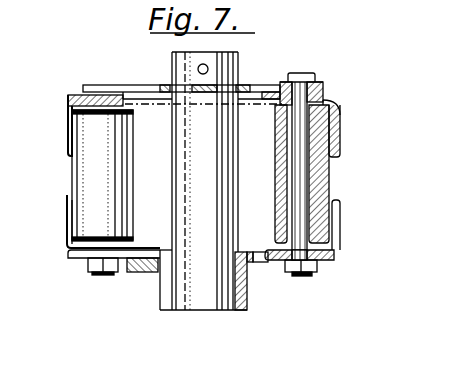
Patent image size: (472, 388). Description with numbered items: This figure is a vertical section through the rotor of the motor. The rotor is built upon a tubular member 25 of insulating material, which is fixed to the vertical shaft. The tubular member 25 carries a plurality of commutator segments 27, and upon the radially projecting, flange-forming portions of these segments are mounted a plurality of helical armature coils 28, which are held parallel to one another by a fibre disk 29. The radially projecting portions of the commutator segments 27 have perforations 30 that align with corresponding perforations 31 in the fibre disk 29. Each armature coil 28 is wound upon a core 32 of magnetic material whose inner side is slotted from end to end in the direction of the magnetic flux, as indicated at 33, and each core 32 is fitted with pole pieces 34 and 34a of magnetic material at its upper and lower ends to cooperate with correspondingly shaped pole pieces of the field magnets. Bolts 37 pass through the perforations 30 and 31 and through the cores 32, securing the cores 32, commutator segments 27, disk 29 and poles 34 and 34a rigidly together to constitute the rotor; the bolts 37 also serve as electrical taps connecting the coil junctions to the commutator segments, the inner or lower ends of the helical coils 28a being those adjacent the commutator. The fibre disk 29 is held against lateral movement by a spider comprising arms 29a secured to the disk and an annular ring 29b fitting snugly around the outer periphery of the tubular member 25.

The tubular member 25 is at (178, 311).
The commutator segments 27 is at (334, 258).
The helical armature coils 28 is at (85, 165).
The helical coils 28a is at (331, 170).
The fibre disk 29 is at (282, 88).
The spider arms 29a is at (133, 85).
The annular ring 29b is at (241, 85).
The perforations 30 is at (324, 262).
The perforations 31 is at (324, 83).
The cores 32 is at (340, 105).
The slot 33 is at (289, 152).
The pole piece 34 is at (337, 222).
The pole piece 34a is at (343, 135).
The bolts 37 is at (312, 73).